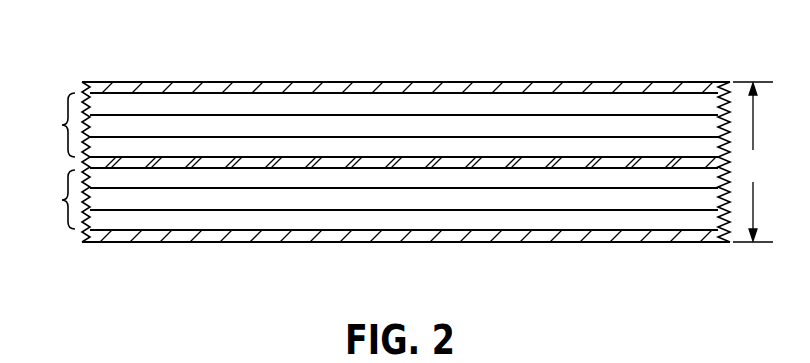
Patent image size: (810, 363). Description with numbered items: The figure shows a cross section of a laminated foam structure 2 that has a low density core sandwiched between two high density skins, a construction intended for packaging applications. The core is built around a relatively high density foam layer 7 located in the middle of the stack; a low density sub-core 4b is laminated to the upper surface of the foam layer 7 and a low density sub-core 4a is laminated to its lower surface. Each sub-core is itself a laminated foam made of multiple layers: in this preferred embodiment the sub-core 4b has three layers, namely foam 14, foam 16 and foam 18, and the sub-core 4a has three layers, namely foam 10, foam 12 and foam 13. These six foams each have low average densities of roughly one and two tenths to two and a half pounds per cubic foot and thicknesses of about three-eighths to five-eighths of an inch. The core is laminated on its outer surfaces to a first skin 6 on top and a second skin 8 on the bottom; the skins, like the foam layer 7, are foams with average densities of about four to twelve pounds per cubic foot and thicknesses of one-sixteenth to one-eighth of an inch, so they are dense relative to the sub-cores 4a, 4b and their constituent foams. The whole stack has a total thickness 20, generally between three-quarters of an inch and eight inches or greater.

The laminated foam structure 2 is at (186, 63).
The low density sub-core 4a is at (50, 199).
The low density sub-core 4b is at (50, 125).
The first skin 6 is at (268, 88).
The foam layer 7 is at (263, 163).
The second skin 8 is at (352, 237).
The foam 10 is at (440, 220).
The foam 12 is at (522, 200).
The foam 13 is at (610, 178).
The foam 14 is at (591, 148).
The foam 16 is at (532, 128).
The foam 18 is at (470, 103).
The total thickness 20 is at (753, 162).